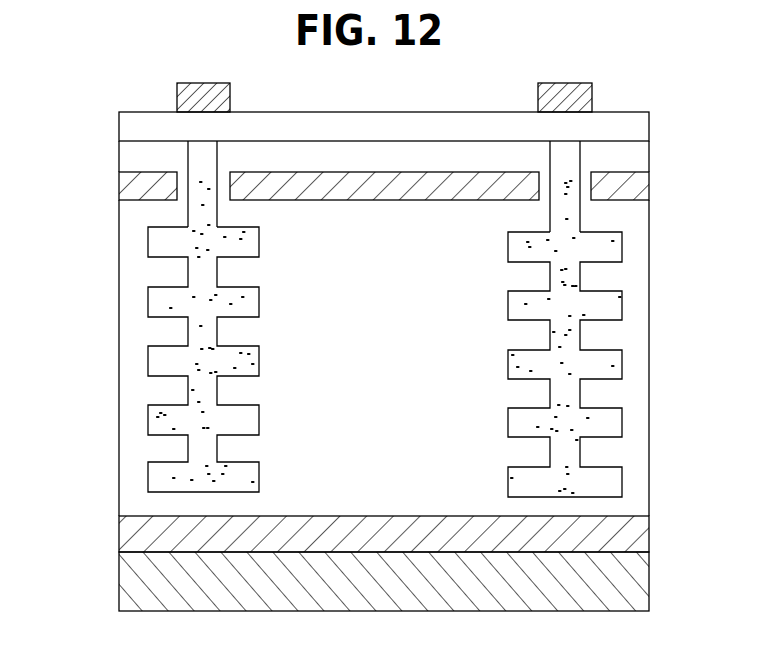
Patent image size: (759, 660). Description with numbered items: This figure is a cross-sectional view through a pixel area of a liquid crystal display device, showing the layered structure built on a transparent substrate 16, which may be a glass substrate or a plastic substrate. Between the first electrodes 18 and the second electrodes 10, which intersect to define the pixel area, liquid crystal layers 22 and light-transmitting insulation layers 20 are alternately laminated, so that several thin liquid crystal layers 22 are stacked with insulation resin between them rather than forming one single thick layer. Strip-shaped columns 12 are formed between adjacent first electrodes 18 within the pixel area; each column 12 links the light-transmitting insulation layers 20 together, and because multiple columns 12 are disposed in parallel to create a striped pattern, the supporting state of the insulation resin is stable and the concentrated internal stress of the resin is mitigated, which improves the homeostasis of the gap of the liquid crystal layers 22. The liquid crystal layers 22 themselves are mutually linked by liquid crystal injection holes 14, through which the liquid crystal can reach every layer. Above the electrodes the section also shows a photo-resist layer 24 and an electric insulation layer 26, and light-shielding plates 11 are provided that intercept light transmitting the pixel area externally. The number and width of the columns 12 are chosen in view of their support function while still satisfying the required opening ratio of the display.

The second electrodes 10 is at (637, 197).
The light-shielding plates 11 is at (592, 97).
The columns 12 is at (138, 247).
The liquid crystal injection holes 14 is at (200, 154).
The transparent substrate 16 is at (637, 585).
The first electrodes 18 is at (637, 537).
The light-transmitting insulation layer 20 is at (637, 222).
The liquid crystal layers 22 is at (610, 253).
The photo-resist layer 24 is at (637, 165).
The electric insulation layer 26 is at (637, 135).